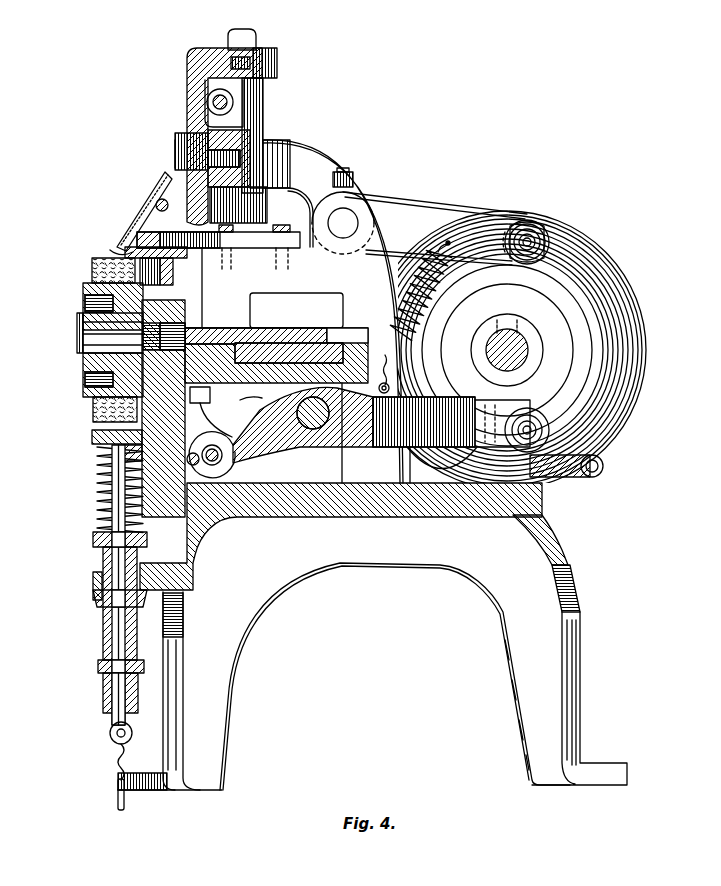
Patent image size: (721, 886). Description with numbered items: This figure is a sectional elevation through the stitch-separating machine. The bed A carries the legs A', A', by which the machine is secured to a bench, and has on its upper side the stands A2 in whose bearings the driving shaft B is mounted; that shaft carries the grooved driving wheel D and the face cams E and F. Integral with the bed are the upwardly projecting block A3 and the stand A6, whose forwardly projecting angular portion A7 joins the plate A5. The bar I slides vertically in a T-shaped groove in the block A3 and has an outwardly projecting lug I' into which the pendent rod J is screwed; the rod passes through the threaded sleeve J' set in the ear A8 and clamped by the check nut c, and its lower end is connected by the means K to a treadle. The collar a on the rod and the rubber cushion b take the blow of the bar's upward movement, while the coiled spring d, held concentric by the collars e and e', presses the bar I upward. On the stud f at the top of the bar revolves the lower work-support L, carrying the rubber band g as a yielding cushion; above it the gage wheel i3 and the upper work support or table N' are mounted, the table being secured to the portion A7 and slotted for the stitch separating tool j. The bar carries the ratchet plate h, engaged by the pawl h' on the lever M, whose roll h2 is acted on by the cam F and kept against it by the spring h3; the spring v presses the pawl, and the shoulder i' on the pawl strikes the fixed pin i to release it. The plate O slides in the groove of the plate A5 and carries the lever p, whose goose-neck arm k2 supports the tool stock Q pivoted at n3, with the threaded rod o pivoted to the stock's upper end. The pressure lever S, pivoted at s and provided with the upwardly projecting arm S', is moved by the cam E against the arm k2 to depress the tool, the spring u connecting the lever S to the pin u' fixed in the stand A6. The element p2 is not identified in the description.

The bed A is at (355, 465).
The legs A' is at (372, 652).
The upwardly projecting stands A2 is at (451, 436).
The upwardly projecting block A3 is at (196, 395).
The plate A5 is at (241, 407).
The upwardly projecting stand A6 is at (345, 290).
The forwardly projecting angular portion A7 is at (240, 287).
The ear A8 is at (93, 588).
The driving shaft B is at (520, 337).
The grooved driving wheel D is at (507, 350).
The face cam E is at (507, 350).
The face cam F is at (529, 350).
The bar I is at (134, 411).
The outwardly projecting lug I' is at (106, 441).
The pendent rod J is at (127, 731).
The threaded sleeve J' is at (105, 585).
The connecting means K is at (127, 762).
The lower work-support L is at (77, 326).
The lever M is at (287, 449).
The upper work support or table N' is at (212, 255).
The plate O is at (289, 353).
The tool stock Q is at (169, 210).
The pressure lever S is at (388, 193).
The upwardly projecting arm S' is at (391, 135).
The collar a is at (136, 702).
The rubber cushion b is at (100, 673).
The check nut c is at (95, 601).
The coiled spring d is at (97, 499).
The collar e is at (110, 542).
The collar e' is at (104, 457).
The stud f is at (80, 350).
The rubber band g is at (92, 268).
The ratchet plate h is at (276, 342).
The pawl h' is at (212, 450).
The roll h2 is at (530, 408).
The spring h3 is at (577, 466).
The pin i is at (206, 470).
The shoulder i' is at (210, 451).
The revoluble gage wheel i3 is at (110, 251).
The stitch separating tool j is at (118, 248).
The arm k2 is at (188, 150).
The pivot n3 is at (177, 158).
The threaded rod o is at (270, 48).
The lever p is at (220, 90).
The rod p2 is at (264, 106).
The fulcrum pin s is at (343, 211).
The spring u is at (407, 291).
The pin u' is at (379, 364).
The spring v is at (216, 420).